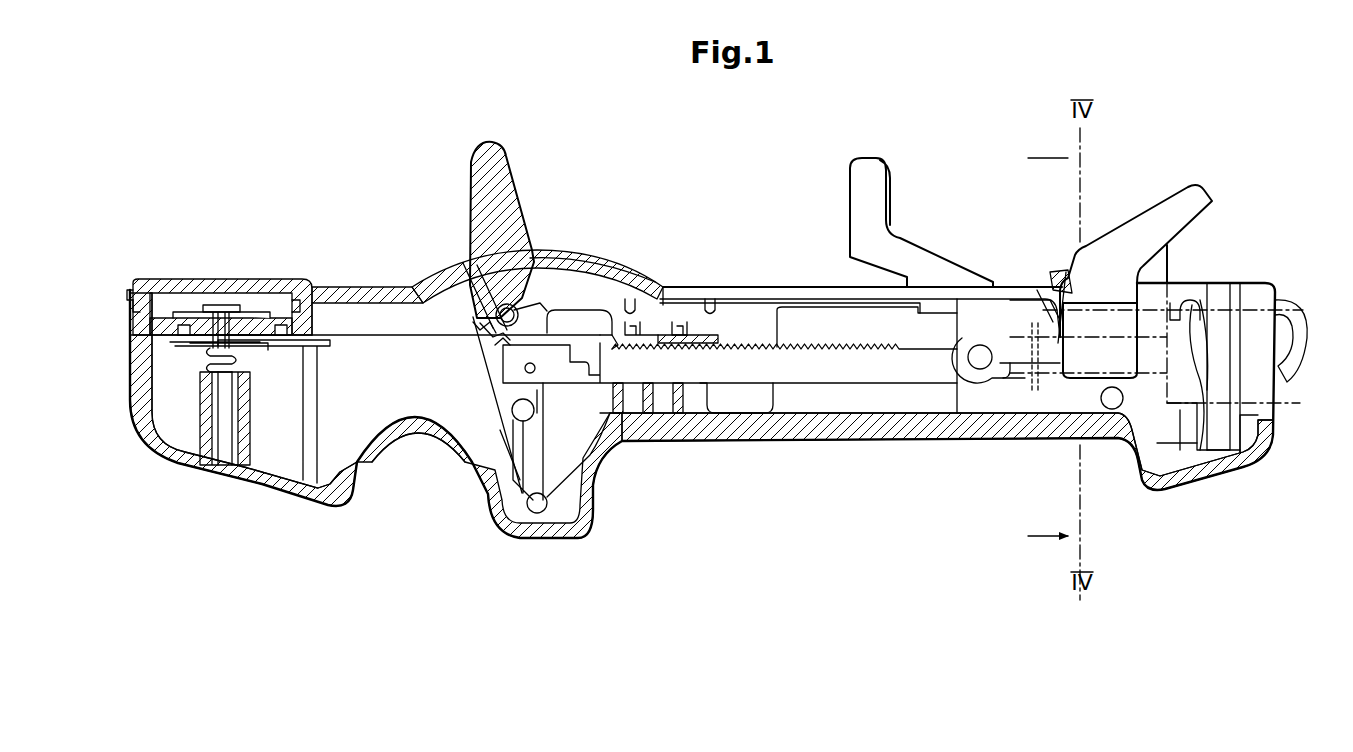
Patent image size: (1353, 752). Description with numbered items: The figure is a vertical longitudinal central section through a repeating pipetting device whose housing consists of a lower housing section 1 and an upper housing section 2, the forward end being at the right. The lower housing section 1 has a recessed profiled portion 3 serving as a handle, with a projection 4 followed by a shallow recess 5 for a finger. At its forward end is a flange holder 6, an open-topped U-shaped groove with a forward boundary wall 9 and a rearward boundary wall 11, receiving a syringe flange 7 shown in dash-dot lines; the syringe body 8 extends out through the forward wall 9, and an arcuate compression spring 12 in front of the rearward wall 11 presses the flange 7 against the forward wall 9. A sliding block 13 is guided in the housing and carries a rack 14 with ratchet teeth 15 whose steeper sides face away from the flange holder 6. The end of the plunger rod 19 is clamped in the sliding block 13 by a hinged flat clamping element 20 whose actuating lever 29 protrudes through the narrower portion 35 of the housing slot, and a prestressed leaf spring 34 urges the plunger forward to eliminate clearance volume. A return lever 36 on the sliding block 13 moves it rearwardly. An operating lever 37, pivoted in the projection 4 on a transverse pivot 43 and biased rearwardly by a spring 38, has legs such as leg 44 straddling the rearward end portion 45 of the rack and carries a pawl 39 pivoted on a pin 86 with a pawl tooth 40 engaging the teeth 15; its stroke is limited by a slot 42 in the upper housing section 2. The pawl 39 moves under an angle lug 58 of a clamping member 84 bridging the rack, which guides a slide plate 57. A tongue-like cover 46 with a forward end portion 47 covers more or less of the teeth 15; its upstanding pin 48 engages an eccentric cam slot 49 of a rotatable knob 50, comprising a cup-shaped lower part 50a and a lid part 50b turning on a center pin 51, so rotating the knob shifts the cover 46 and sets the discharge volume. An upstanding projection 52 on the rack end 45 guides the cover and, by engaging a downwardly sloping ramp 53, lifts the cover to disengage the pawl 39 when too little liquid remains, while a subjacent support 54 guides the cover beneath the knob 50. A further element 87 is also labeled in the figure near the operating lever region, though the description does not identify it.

The lower housing section 1 is at (821, 432).
The upper housing section 2 is at (607, 256).
The recessed profiled portion 3 is at (739, 432).
The projection 4 is at (551, 538).
The shallow recess 5 is at (411, 430).
The flange holder 6 is at (1218, 440).
The syringe flange 7 is at (1208, 292).
The syringe body 8 is at (1284, 316).
The forward boundary wall 9 is at (1262, 424).
The rearward boundary wall 11 is at (1182, 412).
The arcuate compression spring 12 is at (1208, 332).
The sliding block 13 is at (980, 408).
The rack 14 is at (910, 374).
The ratchet teeth 15 is at (820, 350).
The rod 19 is at (1152, 350).
The hinged flat clamping element 20 is at (1066, 277).
The actuating lever 29 is at (1194, 190).
The leaf spring 34 is at (1046, 392).
The narrower portion 35 is at (762, 295).
The return lever 36 is at (870, 183).
The operating lever 37 is at (501, 153).
The spring 38 is at (563, 490).
The pawl 39 is at (568, 315).
The pawl tooth 40 is at (612, 342).
The slot 42 is at (570, 258).
The transverse pivot 43 is at (530, 510).
The leg 44 is at (507, 398).
The rearward end portion 45 is at (514, 370).
The tongue-like cover 46 is at (393, 333).
The forward end portion 47 is at (475, 320).
The upstanding pin 48 is at (283, 327).
The eccentric cam slot 49 is at (183, 327).
The rotatable knob 50 is at (232, 262).
The cup-shaped lower part 50a is at (133, 295).
The lid part 50b is at (300, 280).
The center pin 51 is at (222, 323).
The upstanding projection 52 is at (500, 345).
The downwardly sloping ramp 53 is at (540, 330).
The subjacent support 54 is at (254, 342).
The slide plate 57 is at (711, 302).
The angle lug 58 is at (630, 306).
The clamping member 84 is at (702, 339).
The pin 86 is at (493, 297).
The spring wire 87 is at (500, 430).